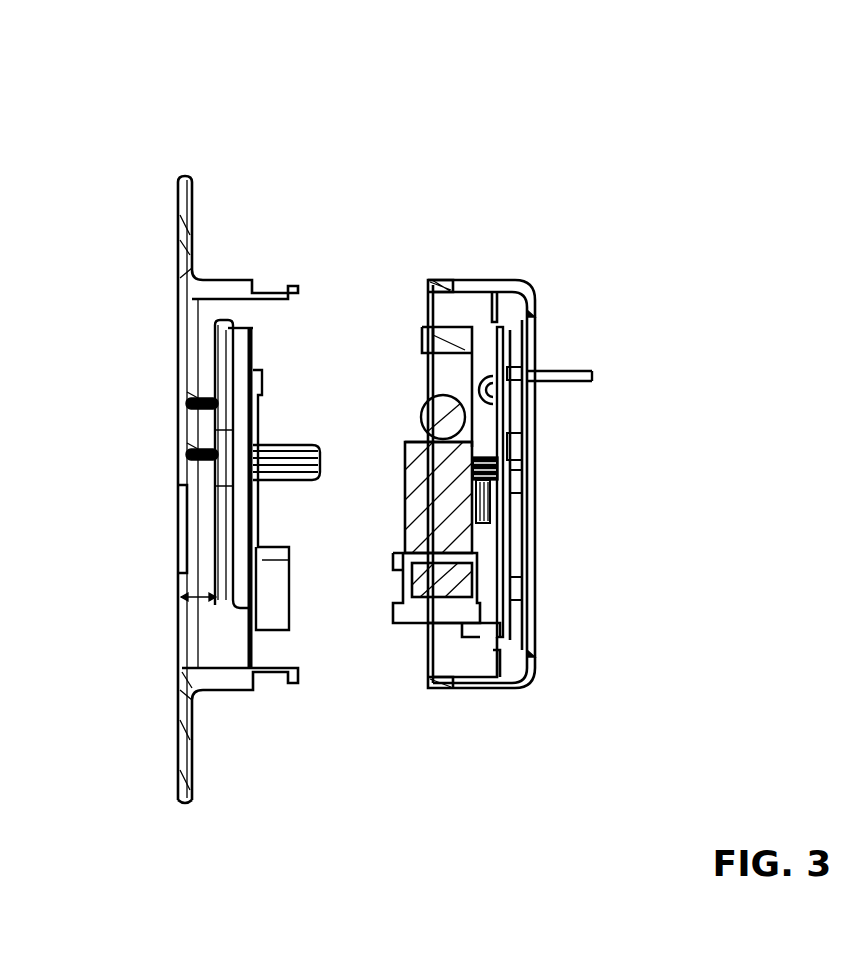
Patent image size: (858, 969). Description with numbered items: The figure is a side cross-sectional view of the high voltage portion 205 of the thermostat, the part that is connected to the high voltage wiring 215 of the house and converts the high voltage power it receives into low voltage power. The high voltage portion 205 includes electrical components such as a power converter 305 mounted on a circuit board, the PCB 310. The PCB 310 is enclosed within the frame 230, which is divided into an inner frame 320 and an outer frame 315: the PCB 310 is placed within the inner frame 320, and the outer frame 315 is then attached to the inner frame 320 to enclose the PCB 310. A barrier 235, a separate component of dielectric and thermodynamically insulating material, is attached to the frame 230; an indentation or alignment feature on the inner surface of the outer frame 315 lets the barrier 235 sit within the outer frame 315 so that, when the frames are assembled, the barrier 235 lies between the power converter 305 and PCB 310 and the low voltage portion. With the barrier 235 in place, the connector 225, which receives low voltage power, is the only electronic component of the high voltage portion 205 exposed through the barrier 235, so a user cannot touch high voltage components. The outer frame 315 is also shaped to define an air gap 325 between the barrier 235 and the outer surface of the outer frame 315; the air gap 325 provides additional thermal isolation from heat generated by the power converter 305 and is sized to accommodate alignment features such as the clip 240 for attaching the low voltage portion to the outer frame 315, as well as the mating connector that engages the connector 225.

The frame 230 is at (540, 102).
The outer frame 315 is at (190, 180).
The inner frame 320 is at (497, 282).
The barrier 235 is at (222, 337).
The clip 240 is at (190, 388).
The high voltage wiring 215 is at (578, 378).
The power converter 305 is at (443, 487).
The PCB 310 is at (503, 585).
The connector 225 is at (407, 613).
The air gap 325 is at (188, 600).
The high voltage portion 205 is at (545, 845).